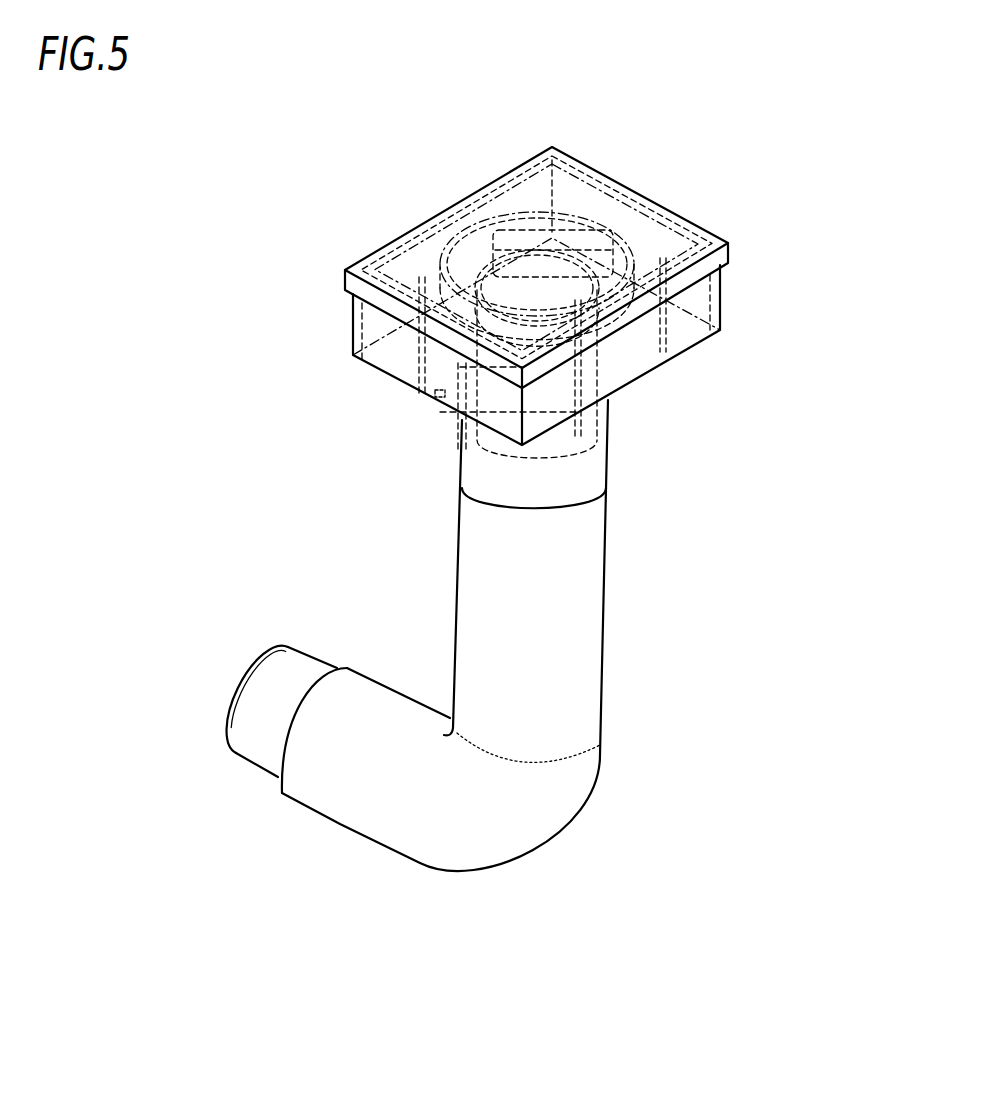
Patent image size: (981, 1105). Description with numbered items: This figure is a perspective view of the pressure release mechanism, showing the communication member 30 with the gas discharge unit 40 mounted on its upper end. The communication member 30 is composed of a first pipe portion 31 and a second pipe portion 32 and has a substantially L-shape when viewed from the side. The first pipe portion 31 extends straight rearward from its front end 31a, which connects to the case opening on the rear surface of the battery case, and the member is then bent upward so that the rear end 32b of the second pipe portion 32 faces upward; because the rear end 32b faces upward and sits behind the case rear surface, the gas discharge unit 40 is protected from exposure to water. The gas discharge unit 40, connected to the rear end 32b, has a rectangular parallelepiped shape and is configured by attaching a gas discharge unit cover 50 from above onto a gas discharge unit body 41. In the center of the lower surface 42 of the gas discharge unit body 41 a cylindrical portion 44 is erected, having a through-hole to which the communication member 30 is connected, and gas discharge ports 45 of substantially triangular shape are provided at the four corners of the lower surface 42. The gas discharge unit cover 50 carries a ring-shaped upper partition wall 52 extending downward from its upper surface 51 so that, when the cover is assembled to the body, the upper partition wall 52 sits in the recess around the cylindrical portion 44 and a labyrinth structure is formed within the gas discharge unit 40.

The communication member 30 is at (468, 878).
The first pipe portion 31 is at (338, 827).
The front end 31a is at (255, 750).
The second pipe portion 32 is at (608, 636).
The rear end 32b is at (613, 423).
The gas discharge unit 40 is at (672, 193).
The gas discharge unit body 41 is at (720, 308).
The lower surface 42 is at (430, 400).
The cylindrical portion 44 is at (618, 240).
The gas discharge ports 45 is at (690, 347).
The gas discharge unit cover 50 is at (496, 182).
The upper surface 51 is at (410, 246).
The upper partition wall 52 is at (465, 221).